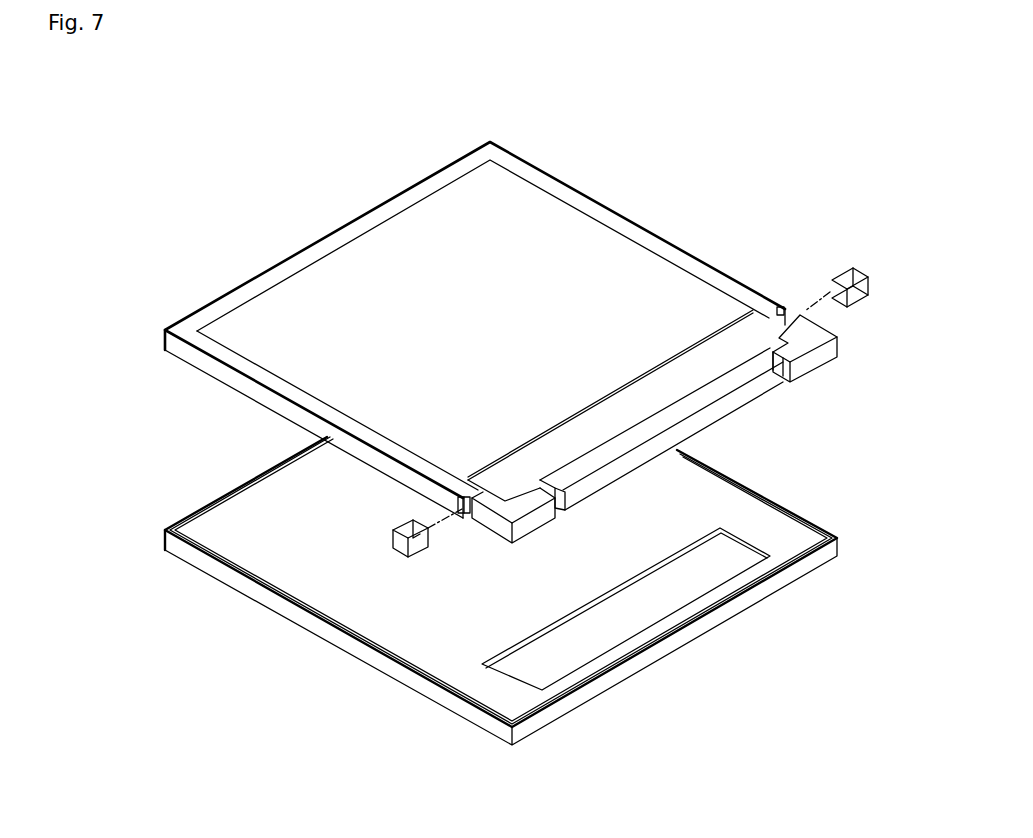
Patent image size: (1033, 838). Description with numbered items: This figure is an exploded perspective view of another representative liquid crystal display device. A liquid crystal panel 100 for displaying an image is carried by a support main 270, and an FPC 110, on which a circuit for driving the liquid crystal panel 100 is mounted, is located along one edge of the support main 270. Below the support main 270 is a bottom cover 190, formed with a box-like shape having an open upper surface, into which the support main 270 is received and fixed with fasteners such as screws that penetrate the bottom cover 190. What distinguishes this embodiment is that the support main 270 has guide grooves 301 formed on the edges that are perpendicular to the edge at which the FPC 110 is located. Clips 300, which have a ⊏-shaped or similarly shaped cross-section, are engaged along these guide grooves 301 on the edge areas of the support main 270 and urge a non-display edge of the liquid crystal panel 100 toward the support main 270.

The support main 270 is at (545, 171).
The liquid crystal panel 100 is at (743, 347).
The FPC 110 is at (723, 417).
The bottom cover 190 is at (818, 531).
The clips 300 is at (853, 266).
The guide grooves 301 is at (781, 308).